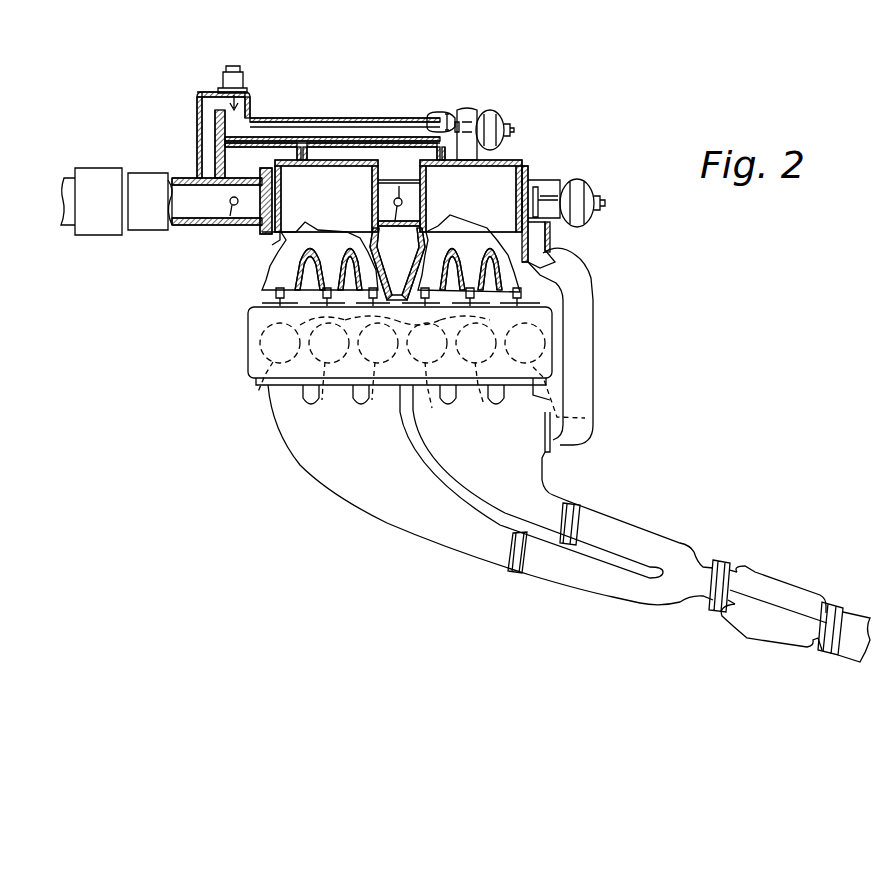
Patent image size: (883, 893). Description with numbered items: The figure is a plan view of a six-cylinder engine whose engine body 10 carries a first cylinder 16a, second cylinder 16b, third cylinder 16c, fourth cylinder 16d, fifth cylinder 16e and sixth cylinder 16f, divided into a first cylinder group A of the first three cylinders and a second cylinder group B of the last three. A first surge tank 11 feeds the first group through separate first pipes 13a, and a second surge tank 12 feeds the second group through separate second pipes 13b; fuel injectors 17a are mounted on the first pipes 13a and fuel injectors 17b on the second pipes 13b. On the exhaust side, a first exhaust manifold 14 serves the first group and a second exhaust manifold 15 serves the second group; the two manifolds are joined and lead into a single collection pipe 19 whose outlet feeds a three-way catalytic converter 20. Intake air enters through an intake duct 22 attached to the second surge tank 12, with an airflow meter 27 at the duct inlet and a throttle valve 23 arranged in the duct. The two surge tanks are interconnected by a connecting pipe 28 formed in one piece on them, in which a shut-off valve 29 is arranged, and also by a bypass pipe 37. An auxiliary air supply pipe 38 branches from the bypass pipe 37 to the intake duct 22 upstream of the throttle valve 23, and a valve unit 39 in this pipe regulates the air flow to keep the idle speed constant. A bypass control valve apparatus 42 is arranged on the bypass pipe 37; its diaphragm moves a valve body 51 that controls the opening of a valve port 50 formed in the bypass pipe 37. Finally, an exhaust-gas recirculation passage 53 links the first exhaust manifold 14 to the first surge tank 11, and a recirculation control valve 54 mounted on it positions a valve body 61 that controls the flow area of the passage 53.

The engine body 10 is at (248, 346).
The first surge tank 11 is at (514, 160).
The second surge tank 12 is at (268, 238).
The first pipes 13a is at (450, 226).
The second pipes 13b is at (305, 230).
The first exhaust manifold 14 is at (548, 492).
The second exhaust manifold 15 is at (313, 477).
The No. 1 cylinder 16a is at (596, 412).
The No. 2 cylinder 16b is at (495, 401).
The No. 3 cylinder 16c is at (442, 401).
The No. 4 cylinder 16d is at (369, 401).
The No. 5 cylinder 16e is at (317, 401).
The No. 6 cylinder 16f is at (247, 390).
The fuel injectors 17a is at (425, 288).
The fuel injectors 17b is at (380, 288).
The collection pipe 19 is at (708, 565).
The three-way catalytic converter 20 is at (770, 580).
The intake duct 22 is at (200, 226).
The throttle valve 23 is at (232, 197).
The airflow meter 27 is at (87, 170).
The connecting pipe 28 is at (397, 207).
The shut-off valve 29 is at (397, 198).
The bypass pipe 37 is at (332, 118).
The auxiliary air supply pipe 38 is at (268, 118).
The valve unit 39 is at (220, 68).
The bypass control valve apparatus 42 is at (504, 108).
The valve port 50 is at (462, 112).
The valve body 51 is at (424, 117).
The exhaust-gas recirculation passage 53 is at (596, 358).
The recirculation control valve 54 is at (592, 178).
The valve body 61 is at (546, 186).